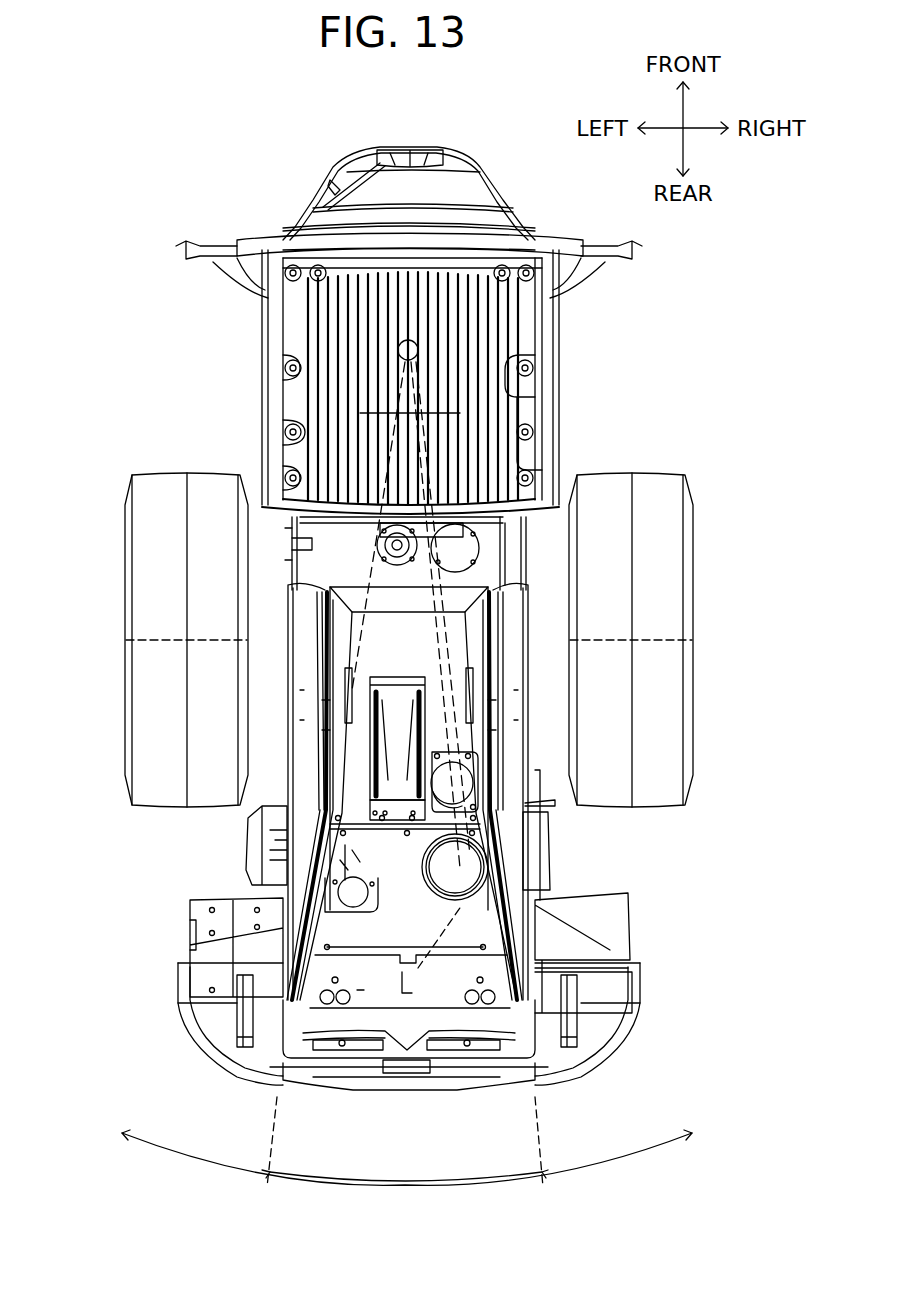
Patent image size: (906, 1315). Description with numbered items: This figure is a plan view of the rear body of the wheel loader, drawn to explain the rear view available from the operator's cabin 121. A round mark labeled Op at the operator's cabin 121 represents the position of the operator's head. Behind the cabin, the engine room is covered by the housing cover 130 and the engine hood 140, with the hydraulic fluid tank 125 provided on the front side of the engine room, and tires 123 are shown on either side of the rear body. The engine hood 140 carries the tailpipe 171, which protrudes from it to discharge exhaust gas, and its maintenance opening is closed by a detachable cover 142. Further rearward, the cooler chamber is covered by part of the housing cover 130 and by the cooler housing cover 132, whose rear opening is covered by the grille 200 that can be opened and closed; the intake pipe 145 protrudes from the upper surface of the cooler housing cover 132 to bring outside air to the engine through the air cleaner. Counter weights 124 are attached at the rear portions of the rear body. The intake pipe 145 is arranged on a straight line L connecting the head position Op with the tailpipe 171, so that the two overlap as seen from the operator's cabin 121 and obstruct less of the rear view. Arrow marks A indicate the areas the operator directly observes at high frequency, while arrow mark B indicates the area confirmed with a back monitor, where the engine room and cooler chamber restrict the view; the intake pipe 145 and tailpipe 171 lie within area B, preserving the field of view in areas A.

The operator's cabin 121 is at (540, 303).
The head position of the operator Op is at (418, 343).
The tires 123 is at (150, 533).
The hydraulic fluid tank 125 is at (500, 540).
The engine hood 140 is at (473, 620).
The housing cover 130 is at (510, 660).
The detachable cover 142 is at (390, 745).
The tailpipe 171 is at (462, 780).
The intake pipe 145 is at (472, 868).
The cooler housing cover 132 is at (480, 970).
The counter weights 124 is at (625, 1028).
The grille 200 is at (450, 1058).
The straight line L is at (429, 952).
The area A is at (407, 1142).
The area B is at (406, 1174).